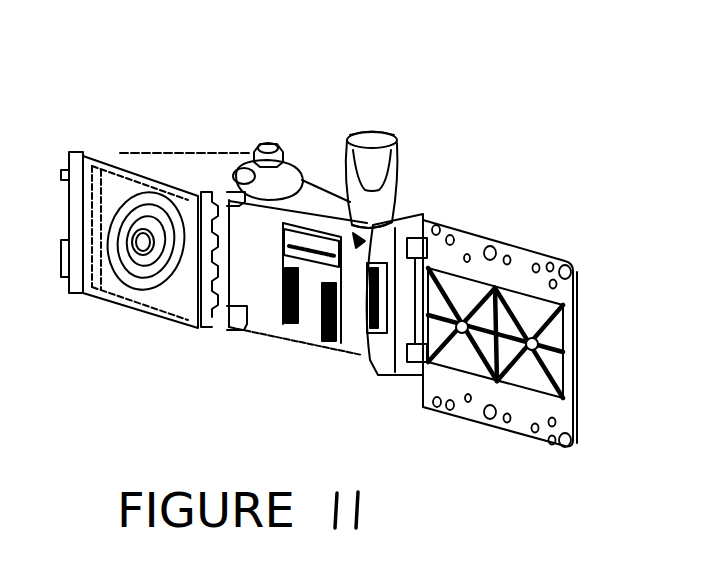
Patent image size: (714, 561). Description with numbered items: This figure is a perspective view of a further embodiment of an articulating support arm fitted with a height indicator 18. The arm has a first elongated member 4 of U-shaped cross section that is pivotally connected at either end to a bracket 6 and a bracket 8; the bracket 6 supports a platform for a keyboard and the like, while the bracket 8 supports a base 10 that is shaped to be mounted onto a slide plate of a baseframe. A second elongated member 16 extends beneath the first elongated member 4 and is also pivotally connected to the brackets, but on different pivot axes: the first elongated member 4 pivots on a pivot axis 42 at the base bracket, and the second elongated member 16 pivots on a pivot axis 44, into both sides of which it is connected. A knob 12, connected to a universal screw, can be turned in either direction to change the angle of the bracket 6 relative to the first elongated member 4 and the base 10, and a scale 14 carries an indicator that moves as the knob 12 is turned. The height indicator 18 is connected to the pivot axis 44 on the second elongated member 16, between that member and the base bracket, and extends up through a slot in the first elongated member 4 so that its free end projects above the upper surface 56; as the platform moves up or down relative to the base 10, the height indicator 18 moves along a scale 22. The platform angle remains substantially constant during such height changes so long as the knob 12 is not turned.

The first elongated member 4 is at (263, 378).
The bracket 6 is at (517, 262).
The bracket 8 is at (218, 162).
The base 10 is at (132, 288).
The knob 12 is at (372, 143).
The scale 14 is at (408, 430).
The second elongated member 16 is at (325, 205).
The height indicator 18 is at (305, 230).
The scale 22 is at (312, 398).
The pivot axis 42 is at (240, 152).
The pivot axis 44 is at (268, 140).
The upper surface 56 is at (216, 392).